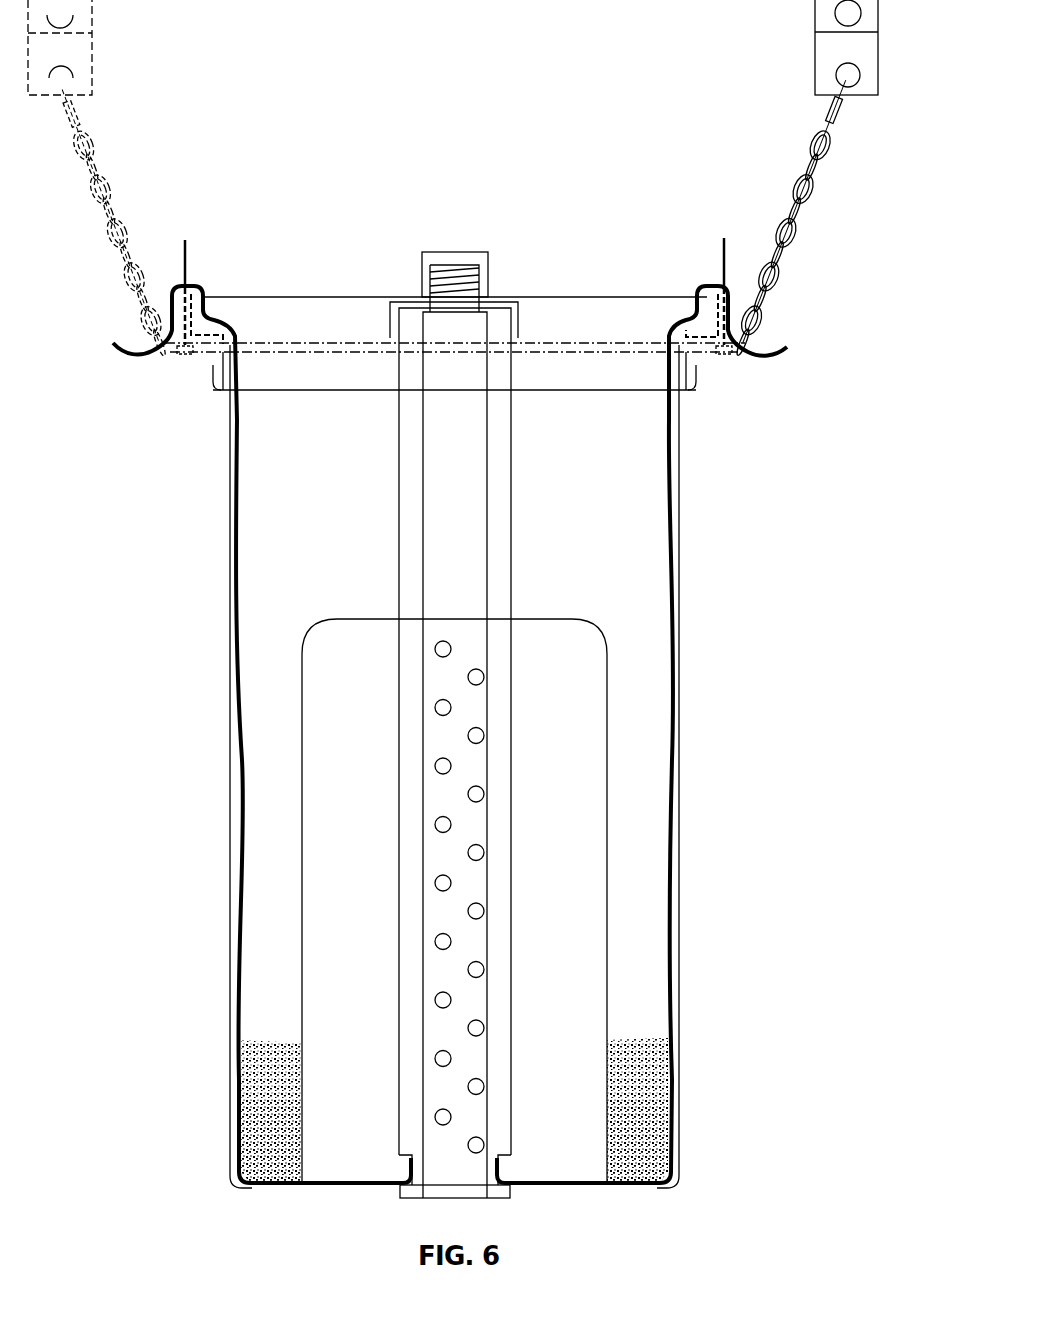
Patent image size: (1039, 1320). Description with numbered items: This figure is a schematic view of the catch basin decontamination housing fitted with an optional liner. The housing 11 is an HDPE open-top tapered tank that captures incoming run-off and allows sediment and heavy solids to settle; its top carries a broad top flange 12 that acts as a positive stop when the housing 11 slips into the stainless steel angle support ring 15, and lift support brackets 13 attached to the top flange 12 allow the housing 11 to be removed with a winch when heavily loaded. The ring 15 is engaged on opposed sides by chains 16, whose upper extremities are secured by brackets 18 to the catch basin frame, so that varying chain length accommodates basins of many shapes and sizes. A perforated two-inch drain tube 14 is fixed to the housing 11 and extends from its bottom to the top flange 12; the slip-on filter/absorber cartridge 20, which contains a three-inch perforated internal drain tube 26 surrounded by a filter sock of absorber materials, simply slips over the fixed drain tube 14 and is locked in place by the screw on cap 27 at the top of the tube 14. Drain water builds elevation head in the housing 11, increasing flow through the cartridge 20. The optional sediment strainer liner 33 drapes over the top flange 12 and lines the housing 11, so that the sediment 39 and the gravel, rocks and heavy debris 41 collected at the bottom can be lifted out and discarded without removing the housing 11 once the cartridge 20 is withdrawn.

The housing 11 is at (680, 715).
The top flange of housing 12 is at (720, 318).
The lift support brackets 13 is at (722, 275).
The perforated drain tube 14 is at (487, 580).
The angle support ring 15 is at (697, 375).
The chains 16 is at (815, 190).
The bracket 18 is at (878, 60).
The filter/absorber cartridge 20 is at (607, 912).
The perforated internal drain tube 26 is at (512, 515).
The screw on cap 27 is at (466, 252).
The sediment strainer liner 33 is at (672, 645).
The sediment 39 is at (673, 1055).
The gravel, rocks and heavy debris 41 is at (673, 1136).